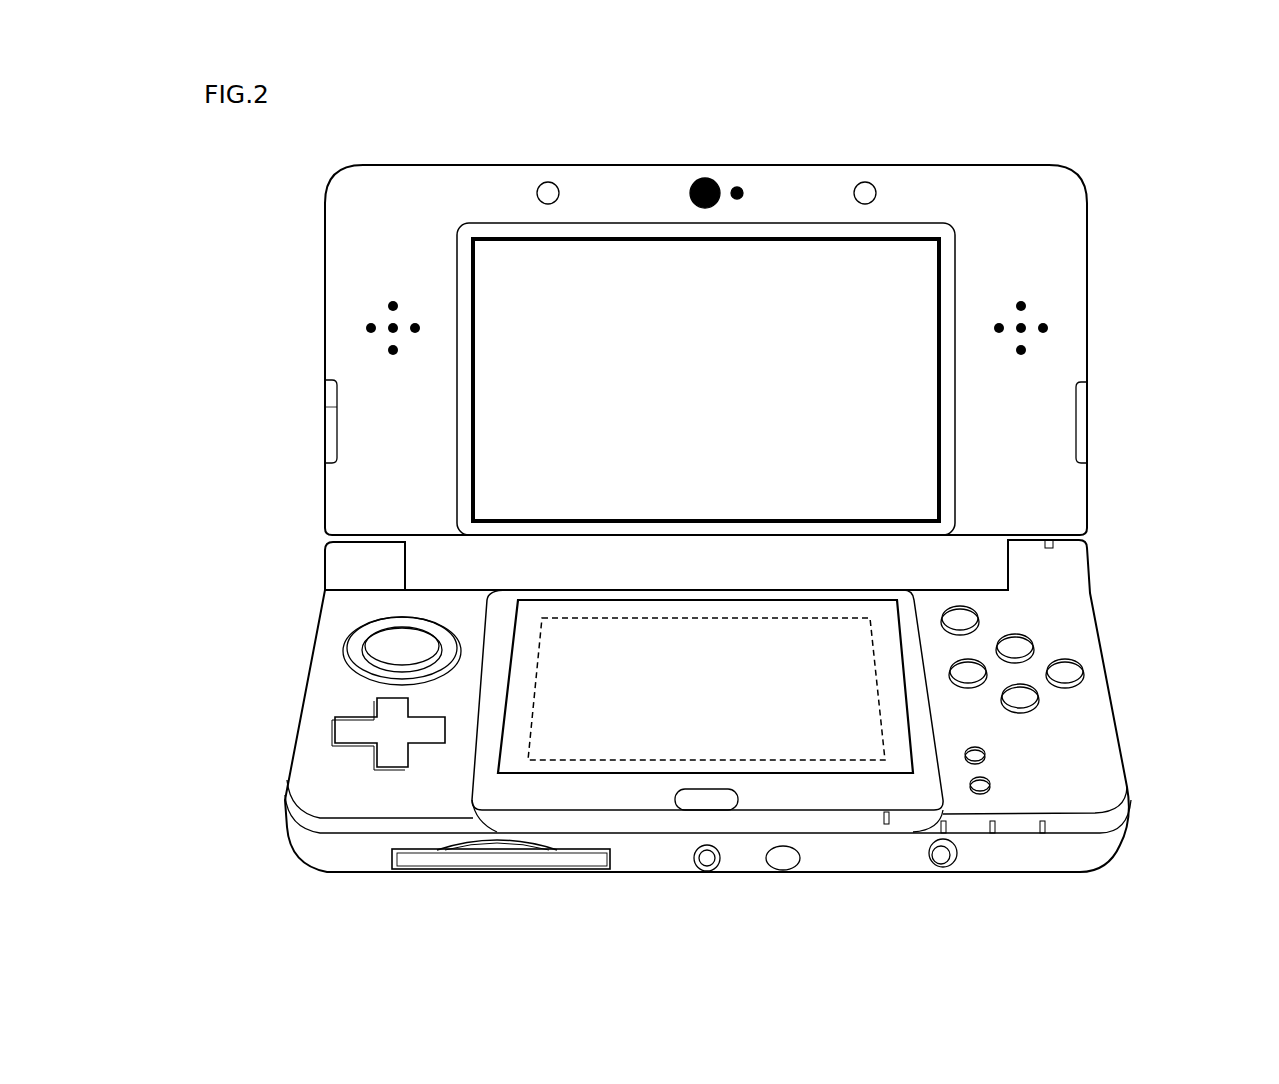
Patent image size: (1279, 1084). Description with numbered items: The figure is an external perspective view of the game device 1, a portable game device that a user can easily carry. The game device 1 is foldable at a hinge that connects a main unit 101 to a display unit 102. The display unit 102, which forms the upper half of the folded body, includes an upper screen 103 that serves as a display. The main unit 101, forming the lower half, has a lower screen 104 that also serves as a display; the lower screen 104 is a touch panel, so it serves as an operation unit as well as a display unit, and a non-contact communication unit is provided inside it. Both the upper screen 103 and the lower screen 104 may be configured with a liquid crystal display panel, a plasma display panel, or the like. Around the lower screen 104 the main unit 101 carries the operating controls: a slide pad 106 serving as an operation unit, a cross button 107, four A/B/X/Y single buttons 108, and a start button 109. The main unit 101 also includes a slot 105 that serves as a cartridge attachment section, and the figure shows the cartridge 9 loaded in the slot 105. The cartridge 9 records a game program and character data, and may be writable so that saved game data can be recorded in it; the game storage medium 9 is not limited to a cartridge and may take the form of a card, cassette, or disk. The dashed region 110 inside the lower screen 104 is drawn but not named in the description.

The game device 1 is at (1120, 142).
The cartridge 9 is at (445, 862).
The main unit 101 is at (1094, 620).
The display unit 102 is at (1088, 248).
The upper screen 103 is at (781, 238).
The lower screen 104 is at (832, 775).
The slot 105 is at (496, 847).
The slide pad 106 is at (355, 660).
The cross button 107 is at (332, 735).
The A/B/X/Y single buttons 108 is at (1060, 698).
The start button 109 is at (987, 753).
The touch panel 110 is at (628, 760).